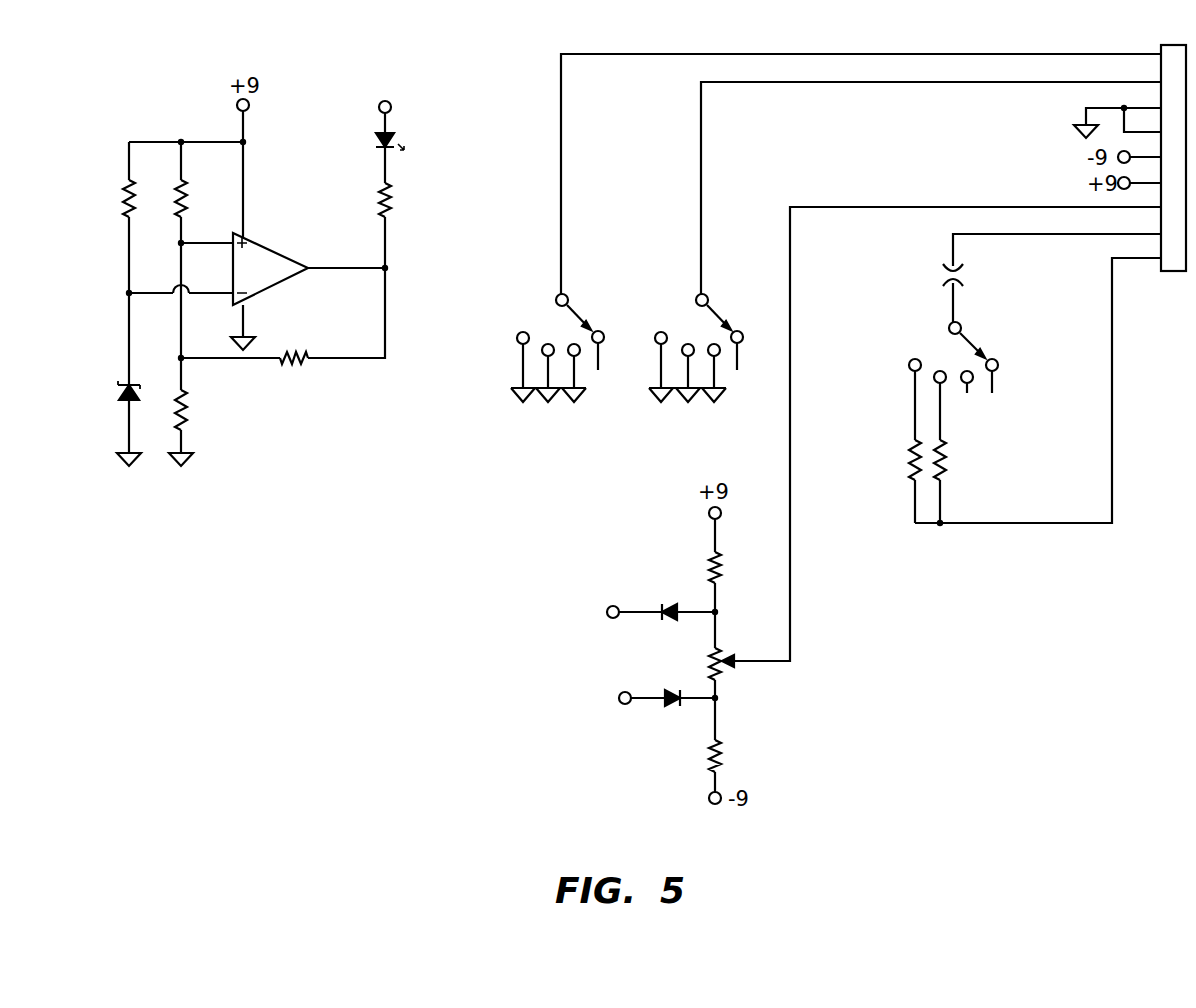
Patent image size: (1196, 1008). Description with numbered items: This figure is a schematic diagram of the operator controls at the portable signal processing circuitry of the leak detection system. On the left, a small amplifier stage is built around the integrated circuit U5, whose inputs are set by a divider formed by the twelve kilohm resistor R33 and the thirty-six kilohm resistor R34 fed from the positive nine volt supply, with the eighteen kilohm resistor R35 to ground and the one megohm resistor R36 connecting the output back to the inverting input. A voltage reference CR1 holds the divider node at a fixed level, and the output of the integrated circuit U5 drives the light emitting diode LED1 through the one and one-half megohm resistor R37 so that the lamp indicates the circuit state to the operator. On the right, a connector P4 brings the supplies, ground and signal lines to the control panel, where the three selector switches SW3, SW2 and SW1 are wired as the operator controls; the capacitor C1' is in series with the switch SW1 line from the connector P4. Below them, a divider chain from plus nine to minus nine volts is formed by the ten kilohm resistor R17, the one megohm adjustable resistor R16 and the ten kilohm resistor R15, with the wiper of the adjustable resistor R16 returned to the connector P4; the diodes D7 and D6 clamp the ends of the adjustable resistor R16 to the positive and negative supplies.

The resistor R33 is at (107, 198).
The resistor R34 is at (201, 198).
The resistor R35 is at (201, 410).
The resistor R36 is at (301, 346).
The resistor R37 is at (406, 200).
The integrated circuit U5 is at (270, 269).
The voltage reference CR1 is at (115, 397).
The light emitting diode LED1 is at (363, 128).
The connector P4 is at (1172, 144).
The switch SW3 is at (553, 346).
The switch SW2 is at (694, 346).
The switch SW1 is at (948, 355).
The capacitor C1' is at (971, 293).
The resistor R17 is at (736, 567).
The resistor R16 is at (701, 664).
The resistor R15 is at (736, 756).
The diode D7 is at (644, 600).
The diode D6 is at (651, 710).